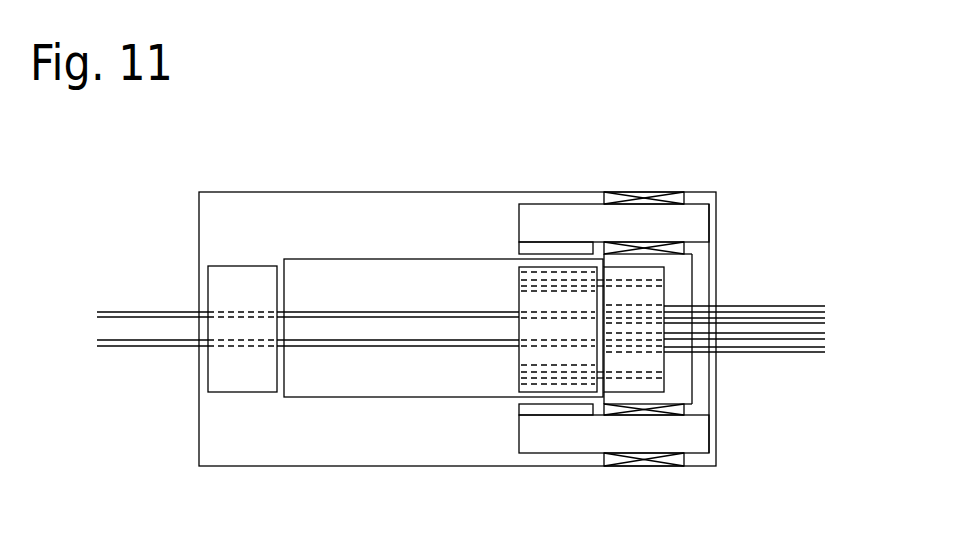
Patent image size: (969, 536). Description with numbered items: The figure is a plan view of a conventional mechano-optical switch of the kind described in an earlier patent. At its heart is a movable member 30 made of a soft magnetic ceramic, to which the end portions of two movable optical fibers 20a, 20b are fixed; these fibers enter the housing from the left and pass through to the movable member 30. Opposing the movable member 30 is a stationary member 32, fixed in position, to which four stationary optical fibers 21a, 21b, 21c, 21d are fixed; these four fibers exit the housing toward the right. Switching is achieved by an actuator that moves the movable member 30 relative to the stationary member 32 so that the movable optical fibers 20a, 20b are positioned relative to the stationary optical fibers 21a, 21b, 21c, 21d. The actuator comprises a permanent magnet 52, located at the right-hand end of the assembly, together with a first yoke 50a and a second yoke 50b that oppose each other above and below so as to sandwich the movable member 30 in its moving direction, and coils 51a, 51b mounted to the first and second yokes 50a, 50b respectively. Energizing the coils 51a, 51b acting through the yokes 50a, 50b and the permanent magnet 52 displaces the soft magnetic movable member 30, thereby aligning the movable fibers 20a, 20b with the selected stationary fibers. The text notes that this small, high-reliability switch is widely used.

The movable optical fiber 20a is at (98, 312).
The movable optical fiber 20b is at (98, 345).
The stationary optical fiber 21a is at (825, 307).
The stationary optical fiber 21b is at (825, 320).
The stationary optical fiber 21c is at (825, 338).
The stationary optical fiber 21d is at (825, 352).
The movable member 30 is at (519, 299).
The stationary member 32 is at (637, 393).
The first yoke 50a is at (561, 220).
The second yoke 50b is at (552, 443).
The coil 51a is at (645, 198).
The coil 51b is at (635, 467).
The permanent magnet 52 is at (680, 372).